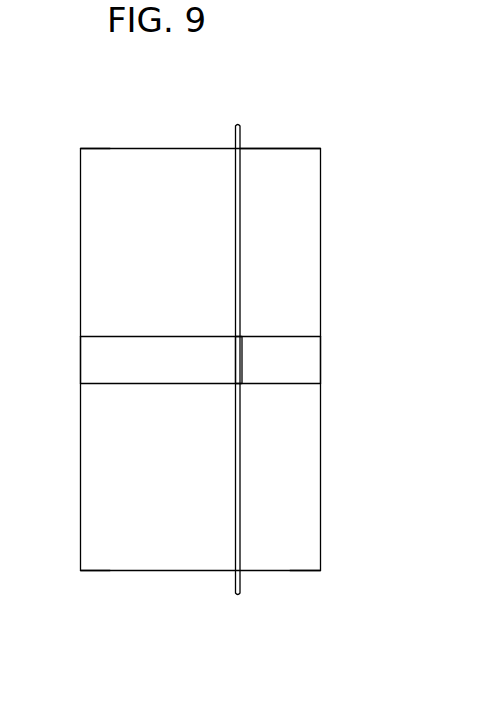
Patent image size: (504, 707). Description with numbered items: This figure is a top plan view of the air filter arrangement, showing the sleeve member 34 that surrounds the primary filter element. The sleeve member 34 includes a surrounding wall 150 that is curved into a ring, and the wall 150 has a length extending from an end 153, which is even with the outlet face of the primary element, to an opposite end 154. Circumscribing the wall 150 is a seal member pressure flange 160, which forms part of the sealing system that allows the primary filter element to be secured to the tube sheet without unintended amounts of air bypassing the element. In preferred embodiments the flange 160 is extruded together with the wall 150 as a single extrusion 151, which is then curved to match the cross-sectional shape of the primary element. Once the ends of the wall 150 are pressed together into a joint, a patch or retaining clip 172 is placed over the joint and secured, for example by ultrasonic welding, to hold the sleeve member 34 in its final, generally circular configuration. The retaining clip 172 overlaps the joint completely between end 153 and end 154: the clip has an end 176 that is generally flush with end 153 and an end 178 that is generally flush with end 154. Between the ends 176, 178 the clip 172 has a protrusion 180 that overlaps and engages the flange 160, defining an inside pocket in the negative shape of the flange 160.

The sleeve member 34 is at (158, 139).
The surrounding wall 150 is at (275, 148).
The single extrusion 151 is at (102, 148).
The retaining clip 172 is at (159, 342).
The end of retaining clip 176 is at (81, 362).
The end of retaining clip 178 is at (320, 358).
The seal member pressure flange 160 is at (237, 596).
The protrusion 180 is at (239, 353).
The end of wall 153 is at (81, 571).
The opposite end of wall 154 is at (319, 571).